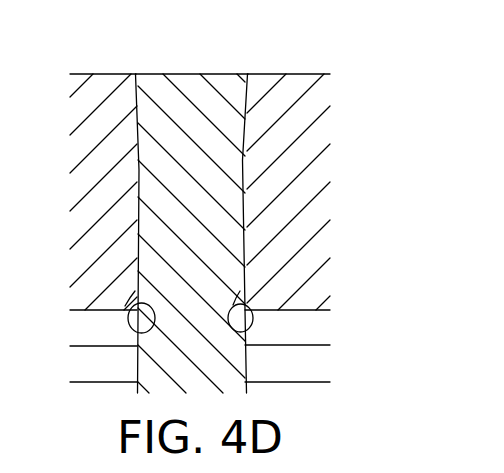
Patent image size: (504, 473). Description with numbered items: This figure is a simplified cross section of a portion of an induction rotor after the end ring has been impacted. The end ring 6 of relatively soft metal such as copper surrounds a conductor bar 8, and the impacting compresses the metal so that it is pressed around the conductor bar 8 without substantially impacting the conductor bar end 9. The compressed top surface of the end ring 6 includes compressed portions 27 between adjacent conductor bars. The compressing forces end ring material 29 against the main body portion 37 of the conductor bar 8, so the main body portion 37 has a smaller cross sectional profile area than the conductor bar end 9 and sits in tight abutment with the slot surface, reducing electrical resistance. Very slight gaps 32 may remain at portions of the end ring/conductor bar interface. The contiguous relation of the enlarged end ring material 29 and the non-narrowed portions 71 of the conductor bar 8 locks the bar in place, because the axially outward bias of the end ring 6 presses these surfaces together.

The end ring 6 is at (319, 140).
The conductor bar 8 is at (228, 263).
The conductor bar end 9 is at (154, 74).
The compressed portion 27 is at (100, 74).
The end ring material 29 is at (141, 148).
The gap 32 is at (136, 74).
The main body portion 37 is at (140, 174).
The non-narrowed portion 71 is at (137, 87).